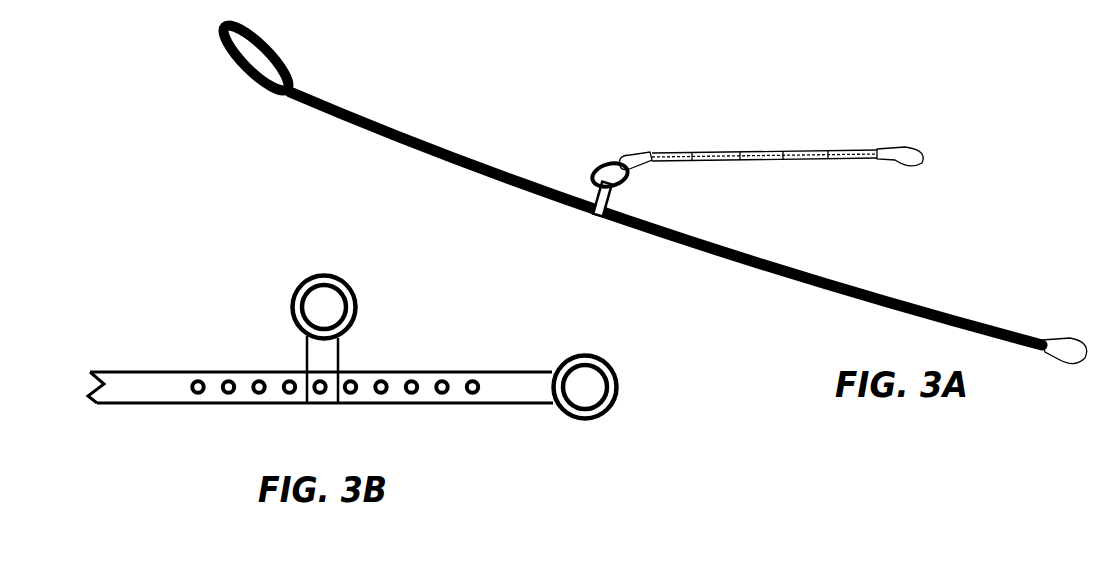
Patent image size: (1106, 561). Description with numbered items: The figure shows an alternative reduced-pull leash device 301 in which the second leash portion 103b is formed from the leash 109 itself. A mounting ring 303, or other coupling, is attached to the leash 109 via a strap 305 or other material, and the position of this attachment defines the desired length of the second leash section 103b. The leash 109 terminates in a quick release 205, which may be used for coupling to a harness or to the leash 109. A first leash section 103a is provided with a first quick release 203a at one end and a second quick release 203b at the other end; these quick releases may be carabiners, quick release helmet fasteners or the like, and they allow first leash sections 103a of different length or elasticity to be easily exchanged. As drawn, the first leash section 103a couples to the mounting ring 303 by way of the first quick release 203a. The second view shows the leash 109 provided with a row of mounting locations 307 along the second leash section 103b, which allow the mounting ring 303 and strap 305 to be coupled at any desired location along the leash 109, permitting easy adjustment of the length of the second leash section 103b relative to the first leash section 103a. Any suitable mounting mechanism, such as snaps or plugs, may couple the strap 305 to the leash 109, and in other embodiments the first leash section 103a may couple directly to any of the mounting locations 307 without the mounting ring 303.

In FIG. 3A, the leash 109 is at (629, 181).
In FIG. 3B, the leash 109 is at (320, 346).
In FIG. 3A, the first leash section 103a is at (753, 150).
In FIG. 3A, the second leash section 103b is at (905, 298).
In FIG. 3B, the second leash section 103b is at (418, 370).
In FIG. 3A, the first quick release 203a is at (637, 150).
In FIG. 3A, the second quick release 203b is at (897, 148).
In FIG. 3A, the quick release 205 is at (1077, 343).
In FIG. 3B, the quick release 205 is at (604, 358).
In FIG. 3A, the reduced-pull leash device 301 is at (968, 180).
In FIG. 3A, the mounting ring 303 is at (596, 166).
In FIG. 3B, the mounting ring 303 is at (303, 281).
In FIG. 3A, the strap 305 is at (612, 190).
In FIG. 3B, the strap 305 is at (313, 353).
In FIG. 3B, the mounting locations 307 is at (485, 408).